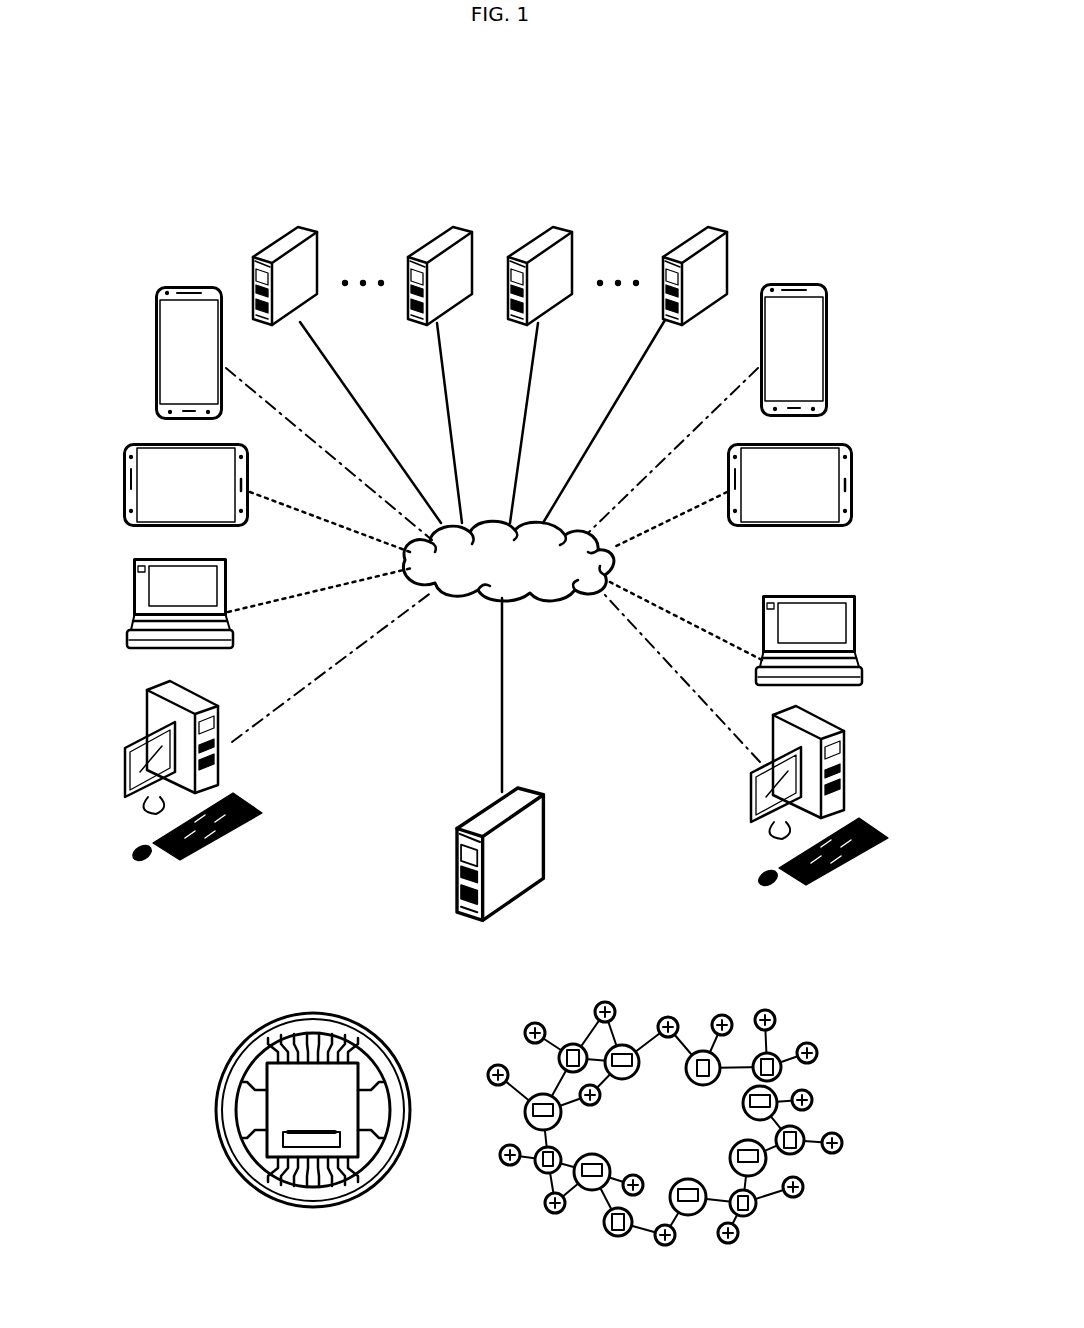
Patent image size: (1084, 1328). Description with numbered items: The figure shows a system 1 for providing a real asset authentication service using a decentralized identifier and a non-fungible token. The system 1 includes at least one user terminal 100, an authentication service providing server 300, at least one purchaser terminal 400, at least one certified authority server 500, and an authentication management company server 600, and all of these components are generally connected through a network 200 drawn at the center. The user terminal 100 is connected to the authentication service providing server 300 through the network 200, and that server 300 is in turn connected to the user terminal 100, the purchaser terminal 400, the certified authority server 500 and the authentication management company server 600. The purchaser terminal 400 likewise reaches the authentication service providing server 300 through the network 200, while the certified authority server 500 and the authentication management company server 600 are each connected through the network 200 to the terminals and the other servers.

The system for providing a real asset authentication service 1 is at (782, 162).
The user terminal 100 is at (98, 792).
The network 200 is at (577, 530).
The authentication service providing server 300 is at (517, 790).
The purchaser terminal 400 is at (906, 310).
The certified authority server 500 is at (435, 216).
The authentication management company server 600 is at (692, 216).